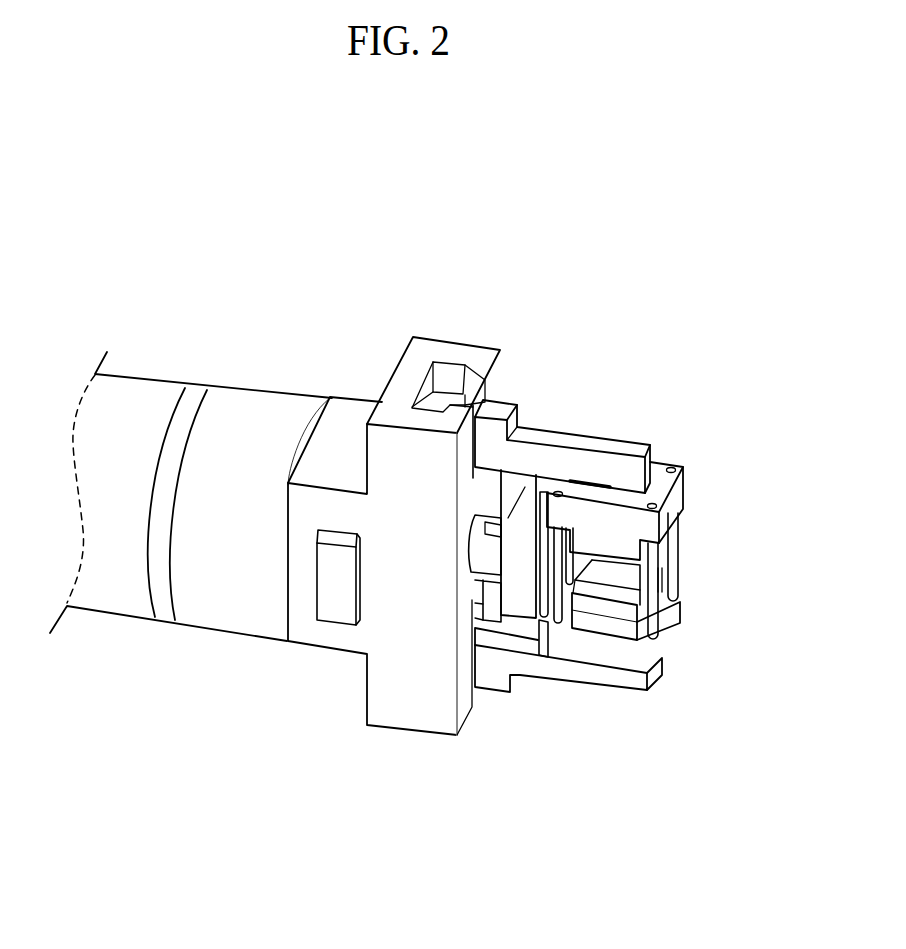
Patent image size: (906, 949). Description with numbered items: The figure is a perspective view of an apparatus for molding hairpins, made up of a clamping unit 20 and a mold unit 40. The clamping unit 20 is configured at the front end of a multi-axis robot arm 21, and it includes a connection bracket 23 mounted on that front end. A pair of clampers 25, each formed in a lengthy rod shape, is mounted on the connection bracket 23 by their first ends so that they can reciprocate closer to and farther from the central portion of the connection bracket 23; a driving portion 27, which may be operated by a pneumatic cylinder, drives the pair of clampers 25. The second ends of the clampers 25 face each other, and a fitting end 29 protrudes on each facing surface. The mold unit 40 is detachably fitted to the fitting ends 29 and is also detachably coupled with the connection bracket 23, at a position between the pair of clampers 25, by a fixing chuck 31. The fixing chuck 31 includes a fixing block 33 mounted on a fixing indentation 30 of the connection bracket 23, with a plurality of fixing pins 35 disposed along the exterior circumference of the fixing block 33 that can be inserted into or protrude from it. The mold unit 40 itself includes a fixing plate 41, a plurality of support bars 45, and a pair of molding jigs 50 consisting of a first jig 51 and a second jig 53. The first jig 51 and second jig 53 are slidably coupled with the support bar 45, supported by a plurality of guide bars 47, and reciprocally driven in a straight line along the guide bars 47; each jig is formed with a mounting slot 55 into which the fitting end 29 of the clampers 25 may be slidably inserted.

The clamping unit 20 is at (346, 376).
The multi-axis robot arm 21 is at (208, 608).
The connection bracket 23 is at (423, 352).
The clampers 25 is at (582, 438).
The driving portion 27 is at (330, 577).
The fitting end 29 is at (600, 464).
The fixing indentation 30 is at (515, 618).
The fixing chuck 31 is at (432, 675).
The fixing block 33 is at (485, 527).
The fixing pin 35 is at (487, 547).
The mold unit 40 is at (647, 550).
The fixing plate 41 is at (527, 503).
The support bar 45 is at (522, 625).
The guide bar 47 is at (678, 578).
The molding jigs 50 is at (658, 498).
The first jig 51 is at (675, 490).
The second jig 53 is at (660, 628).
The mounting slot 55 is at (603, 458).